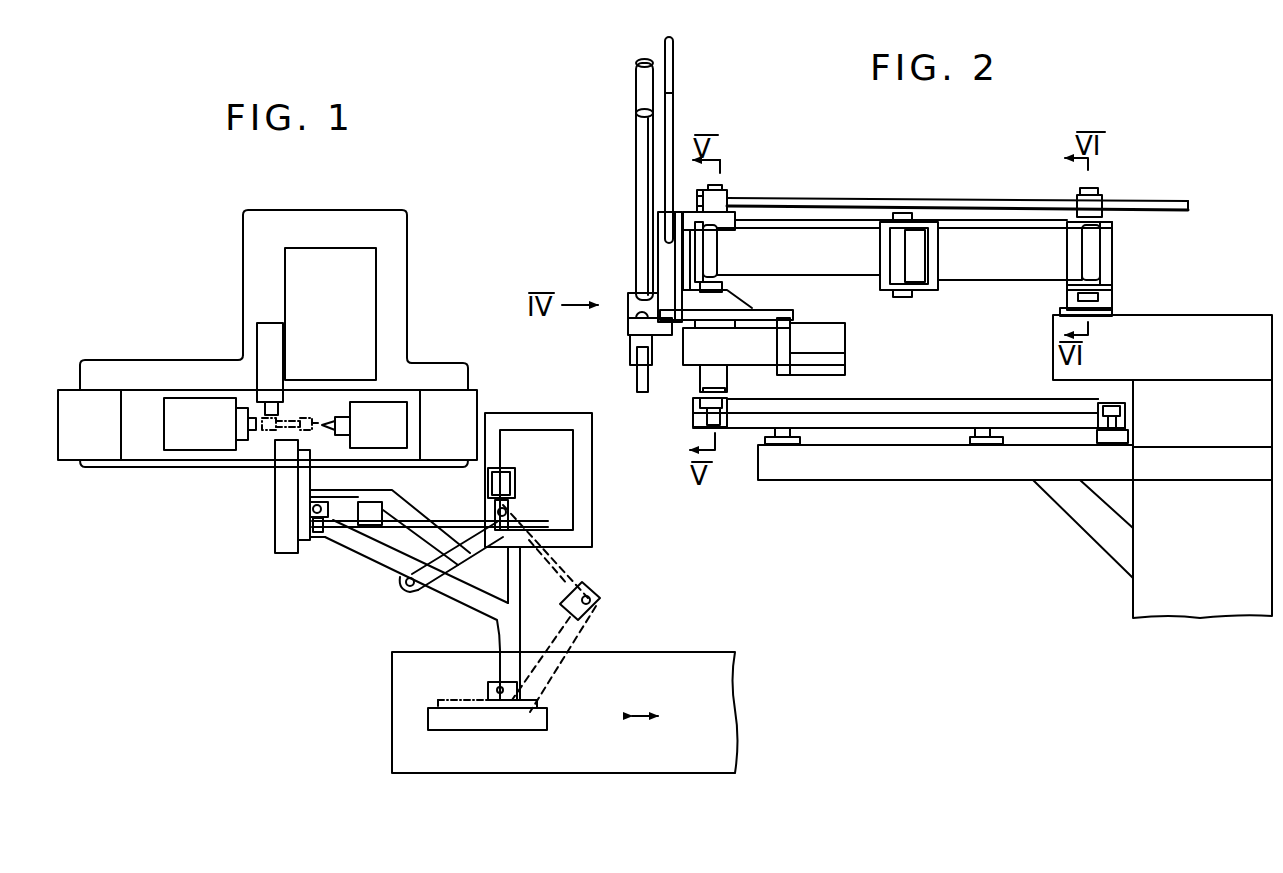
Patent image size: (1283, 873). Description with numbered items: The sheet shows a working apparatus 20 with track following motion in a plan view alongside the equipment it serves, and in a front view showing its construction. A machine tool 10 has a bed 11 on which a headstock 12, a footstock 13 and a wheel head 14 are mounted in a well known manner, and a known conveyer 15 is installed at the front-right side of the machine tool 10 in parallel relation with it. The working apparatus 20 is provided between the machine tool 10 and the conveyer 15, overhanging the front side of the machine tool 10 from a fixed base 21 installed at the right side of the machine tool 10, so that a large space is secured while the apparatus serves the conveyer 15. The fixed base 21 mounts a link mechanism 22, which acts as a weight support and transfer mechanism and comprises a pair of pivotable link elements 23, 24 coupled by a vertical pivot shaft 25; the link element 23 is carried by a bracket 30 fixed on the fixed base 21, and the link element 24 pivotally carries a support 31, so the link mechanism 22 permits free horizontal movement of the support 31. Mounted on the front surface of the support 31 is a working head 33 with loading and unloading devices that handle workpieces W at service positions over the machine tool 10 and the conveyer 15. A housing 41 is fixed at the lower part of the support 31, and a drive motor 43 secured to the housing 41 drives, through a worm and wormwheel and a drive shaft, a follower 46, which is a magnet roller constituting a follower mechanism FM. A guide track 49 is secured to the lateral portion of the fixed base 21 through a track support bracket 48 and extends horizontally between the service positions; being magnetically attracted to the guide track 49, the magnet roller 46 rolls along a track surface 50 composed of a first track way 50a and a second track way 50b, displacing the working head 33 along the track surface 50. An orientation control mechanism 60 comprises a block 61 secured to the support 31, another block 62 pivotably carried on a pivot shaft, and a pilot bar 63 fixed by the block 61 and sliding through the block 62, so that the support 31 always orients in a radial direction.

In FIG. 1, the machine tool 10 is at (420, 258).
In FIG. 1, the bed 11 is at (243, 235).
In FIG. 1, the headstock 12 is at (195, 405).
In FIG. 1, the footstock 13 is at (392, 410).
In FIG. 1, the wheel head 14 is at (298, 292).
In FIG. 1, the workpiece W is at (262, 432).
In FIG. 1, the conveyer 15 is at (618, 668).
In FIG. 1, the working apparatus 20 is at (358, 584).
In FIG. 1, the fixed base 21 is at (587, 462).
In FIG. 2, the fixed base 21 is at (1185, 598).
In FIG. 1, the working head 33 is at (275, 552).
In FIG. 2, the working head 33 is at (615, 222).
In FIG. 2, the support 31 is at (683, 210).
In FIG. 2, the link mechanism 22 is at (958, 290).
In FIG. 2, the link element 23 is at (996, 272).
In FIG. 2, the link element 24 is at (843, 270).
In FIG. 2, the pivot shaft 25 is at (908, 215).
In FIG. 2, the bracket 30 is at (1112, 266).
In FIG. 2, the housing 41 is at (697, 350).
In FIG. 2, the drive motor 43 is at (843, 364).
In FIG. 2, the follower 46 is at (728, 406).
In FIG. 2, the track support bracket 48 is at (955, 470).
In FIG. 2, the guide track 49 is at (870, 432).
In FIG. 2, the track surface 50 is at (992, 400).
In FIG. 2, the first track way 50a is at (1043, 400).
In FIG. 2, the second track way 50b is at (1078, 400).
In FIG. 2, the orientation control mechanism 60 is at (964, 188).
In FIG. 2, the block 61 is at (718, 200).
In FIG. 2, the block 62 is at (1082, 205).
In FIG. 2, the pilot bar 63 is at (900, 218).
In FIG. 2, the follower mechanism FM is at (727, 436).